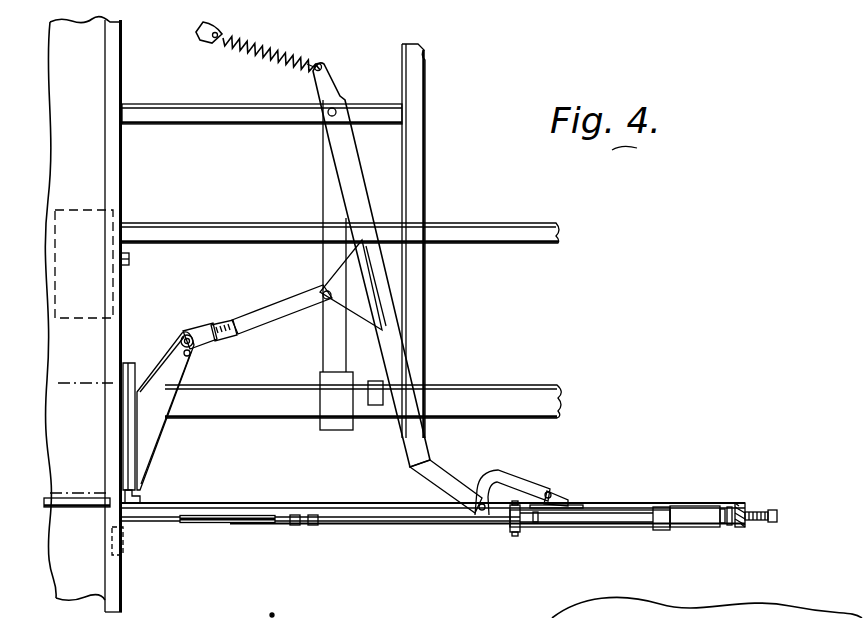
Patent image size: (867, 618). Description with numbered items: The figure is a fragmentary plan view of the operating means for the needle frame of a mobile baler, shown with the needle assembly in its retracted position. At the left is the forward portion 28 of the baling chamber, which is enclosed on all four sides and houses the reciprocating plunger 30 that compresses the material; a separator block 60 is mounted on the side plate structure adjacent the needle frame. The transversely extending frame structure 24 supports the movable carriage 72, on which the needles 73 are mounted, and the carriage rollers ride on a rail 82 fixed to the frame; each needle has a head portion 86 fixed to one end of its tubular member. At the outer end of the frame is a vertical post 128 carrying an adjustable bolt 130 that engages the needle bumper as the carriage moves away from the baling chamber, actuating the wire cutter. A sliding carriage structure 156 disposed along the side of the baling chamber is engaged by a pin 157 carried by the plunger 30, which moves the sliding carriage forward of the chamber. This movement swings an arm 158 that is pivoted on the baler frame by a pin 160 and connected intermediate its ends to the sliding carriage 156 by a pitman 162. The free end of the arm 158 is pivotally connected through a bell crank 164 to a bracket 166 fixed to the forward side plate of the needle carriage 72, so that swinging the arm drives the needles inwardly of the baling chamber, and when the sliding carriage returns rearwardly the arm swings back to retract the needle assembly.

The forward portion 28 is at (123, 79).
The reciprocating plunger 30 is at (91, 317).
The frame structure 24 is at (264, 500).
The separator block 60 is at (121, 543).
The movable carriage 72 is at (583, 528).
The needle 73 is at (416, 526).
The rail 82 is at (213, 527).
The head portion 86 is at (294, 524).
The vertical post 128 is at (738, 529).
The bolt 130 is at (752, 510).
The sliding carriage structure 156 is at (154, 412).
The pin 157 is at (131, 260).
The arm 158 is at (364, 155).
The pin 160 is at (327, 116).
The pitman 162 is at (286, 321).
The bell crank 164 is at (527, 481).
The bracket 166 is at (564, 496).